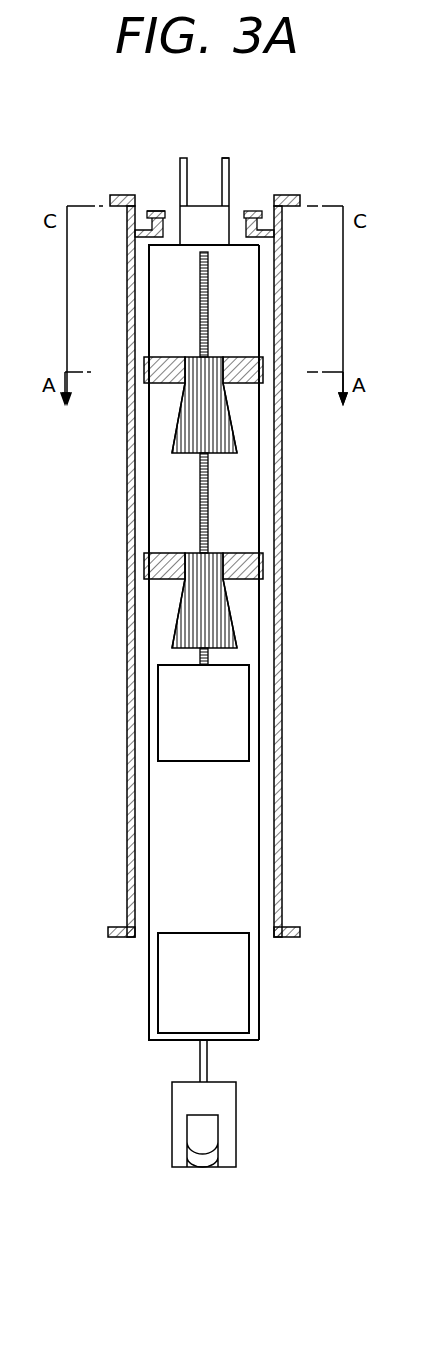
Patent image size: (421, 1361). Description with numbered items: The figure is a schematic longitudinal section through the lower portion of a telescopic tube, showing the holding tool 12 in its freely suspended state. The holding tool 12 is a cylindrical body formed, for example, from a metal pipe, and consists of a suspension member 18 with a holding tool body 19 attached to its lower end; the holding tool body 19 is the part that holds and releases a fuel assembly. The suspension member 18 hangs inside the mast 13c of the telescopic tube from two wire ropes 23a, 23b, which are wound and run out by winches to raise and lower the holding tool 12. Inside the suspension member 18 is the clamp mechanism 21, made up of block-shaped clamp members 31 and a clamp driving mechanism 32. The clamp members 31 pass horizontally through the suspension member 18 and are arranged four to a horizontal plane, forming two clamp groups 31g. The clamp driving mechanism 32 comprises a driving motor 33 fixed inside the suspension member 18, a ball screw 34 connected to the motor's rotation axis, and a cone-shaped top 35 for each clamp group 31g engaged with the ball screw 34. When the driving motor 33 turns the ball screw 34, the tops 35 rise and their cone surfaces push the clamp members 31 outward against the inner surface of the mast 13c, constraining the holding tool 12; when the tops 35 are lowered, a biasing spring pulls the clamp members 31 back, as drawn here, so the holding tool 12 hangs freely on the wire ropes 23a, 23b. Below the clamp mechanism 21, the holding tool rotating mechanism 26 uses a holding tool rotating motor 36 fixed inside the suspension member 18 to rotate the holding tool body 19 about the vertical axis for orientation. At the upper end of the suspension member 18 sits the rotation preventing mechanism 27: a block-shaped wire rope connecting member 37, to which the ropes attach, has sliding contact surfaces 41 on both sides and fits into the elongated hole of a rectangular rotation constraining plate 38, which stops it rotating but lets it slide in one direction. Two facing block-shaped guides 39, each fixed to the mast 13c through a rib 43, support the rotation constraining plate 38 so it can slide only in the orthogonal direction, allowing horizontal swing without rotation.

The holding tool 12 is at (295, 1035).
The mast 13c is at (280, 642).
The suspension member 18 is at (160, 797).
The holding tool body 19 is at (218, 1102).
The clamp mechanism 21 is at (250, 484).
The wire rope 23a is at (180, 167).
The wire rope 23b is at (232, 163).
The holding tool rotating mechanism 26 is at (135, 1000).
The rotation preventing mechanism 27 is at (275, 160).
The clamp member 31 is at (165, 358).
The clamp group 31g is at (255, 400).
The clamp driving mechanism 32 is at (258, 660).
The driving motor 33 is at (230, 747).
The ball screw 34 is at (200, 482).
The top 35 is at (177, 417).
The holding tool rotating motor 36 is at (245, 985).
The wire rope connecting member 37 is at (199, 206).
The rotation constraining plate 38 is at (152, 210).
The guide 39 is at (130, 223).
The sliding contact surface 41 is at (218, 233).
The rib 43 is at (128, 236).